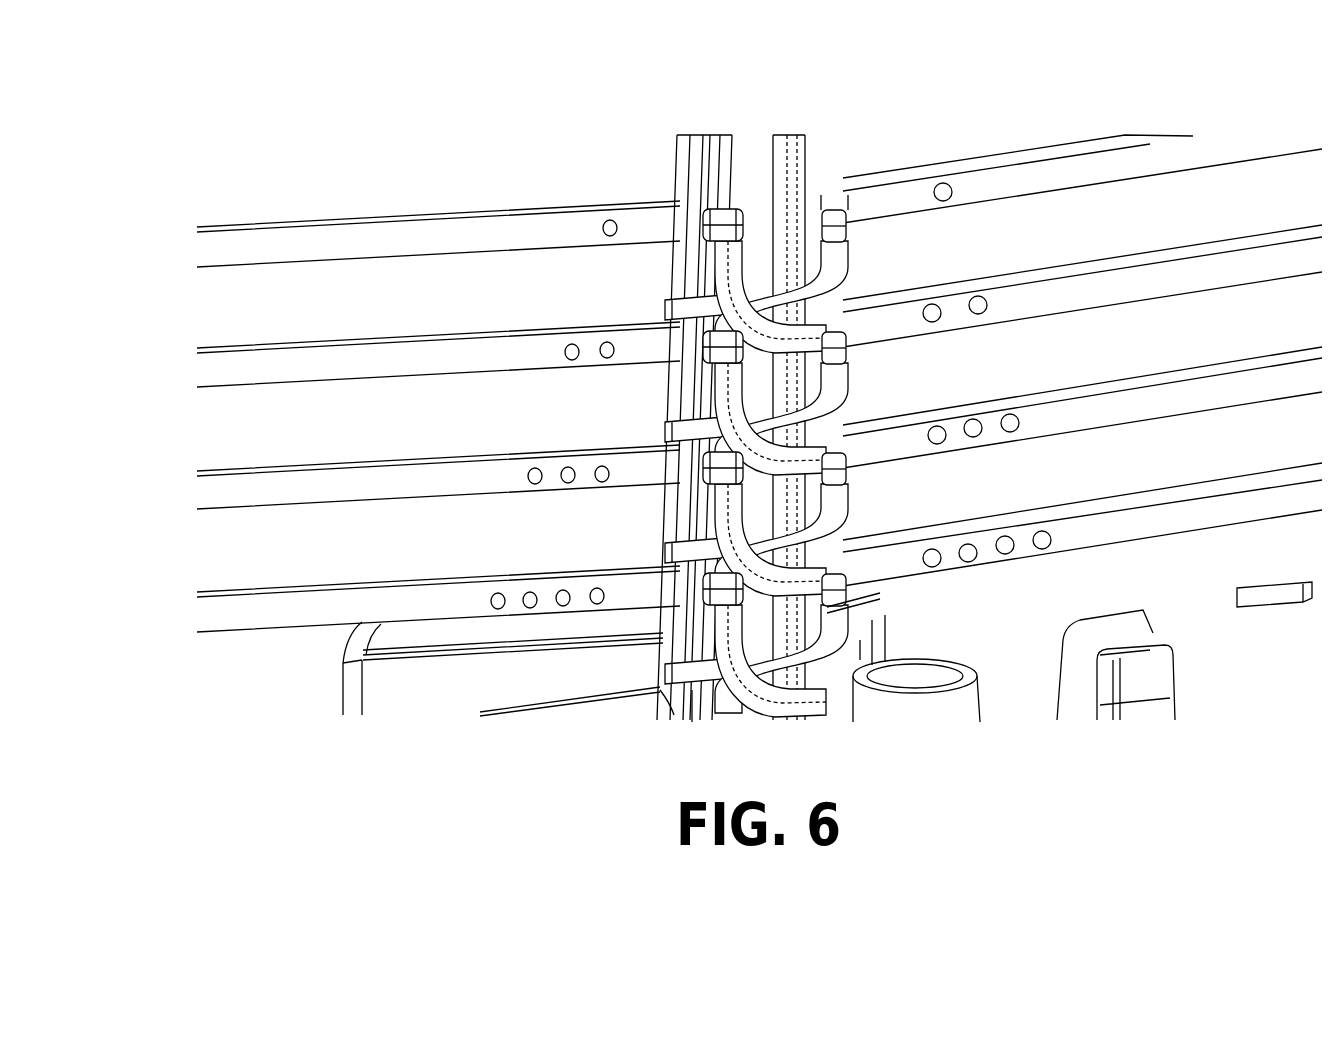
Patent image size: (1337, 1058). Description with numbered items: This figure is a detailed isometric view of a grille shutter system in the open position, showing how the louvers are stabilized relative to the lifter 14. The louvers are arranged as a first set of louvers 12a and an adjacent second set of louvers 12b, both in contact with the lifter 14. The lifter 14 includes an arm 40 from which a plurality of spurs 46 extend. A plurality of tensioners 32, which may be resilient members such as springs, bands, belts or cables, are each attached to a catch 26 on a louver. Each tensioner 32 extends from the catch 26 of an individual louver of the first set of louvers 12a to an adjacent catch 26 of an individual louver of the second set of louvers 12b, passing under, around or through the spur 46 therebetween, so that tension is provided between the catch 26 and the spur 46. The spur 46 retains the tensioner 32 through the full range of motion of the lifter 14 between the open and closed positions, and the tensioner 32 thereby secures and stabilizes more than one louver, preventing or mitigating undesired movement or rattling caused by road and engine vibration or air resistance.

The first set of louvers 12a is at (452, 235).
The second set of louvers 12b is at (1118, 168).
The lifter 14 is at (752, 177).
The catch 26 is at (727, 338).
The tensioner 32 is at (835, 292).
The arm 40 is at (785, 140).
The spur 46 is at (815, 462).